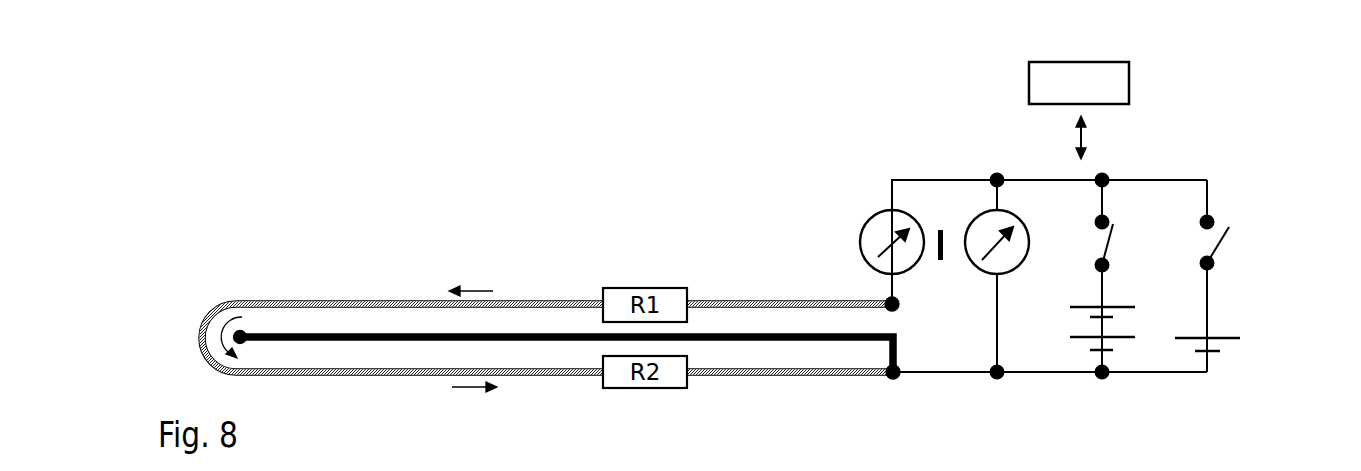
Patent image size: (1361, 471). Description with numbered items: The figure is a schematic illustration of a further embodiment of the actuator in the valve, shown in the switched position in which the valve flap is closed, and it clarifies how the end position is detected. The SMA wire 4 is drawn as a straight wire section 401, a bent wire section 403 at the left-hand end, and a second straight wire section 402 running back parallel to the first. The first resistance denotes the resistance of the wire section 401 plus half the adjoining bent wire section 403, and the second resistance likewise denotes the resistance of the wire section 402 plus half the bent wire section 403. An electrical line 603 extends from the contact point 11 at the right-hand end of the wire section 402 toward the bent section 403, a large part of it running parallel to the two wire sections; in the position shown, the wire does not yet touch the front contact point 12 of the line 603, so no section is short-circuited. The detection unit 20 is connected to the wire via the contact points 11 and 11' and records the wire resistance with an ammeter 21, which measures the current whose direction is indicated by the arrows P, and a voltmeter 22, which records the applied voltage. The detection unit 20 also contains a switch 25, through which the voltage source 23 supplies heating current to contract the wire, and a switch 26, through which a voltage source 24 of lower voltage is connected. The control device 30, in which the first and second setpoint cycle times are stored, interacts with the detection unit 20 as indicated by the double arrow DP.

The SMA wire 4 is at (522, 335).
The wire section 401 is at (543, 302).
The wire section 402 is at (753, 377).
The bent wire section 403 is at (202, 330).
The electrical line 603 is at (427, 343).
The front contact point 12 is at (243, 330).
The contact point 11 is at (881, 396).
The contact point 11' is at (859, 286).
The detection unit 20 is at (1071, 251).
The ammeter 21 is at (922, 262).
The voltmeter 22 is at (1025, 265).
The voltage source 23 is at (1118, 303).
The voltage source 24 is at (1213, 335).
The switch 25 is at (1110, 240).
The switch 26 is at (1220, 240).
The control device 30 is at (1130, 83).
The double arrow DP is at (1080, 137).
The arrows P is at (220, 318).